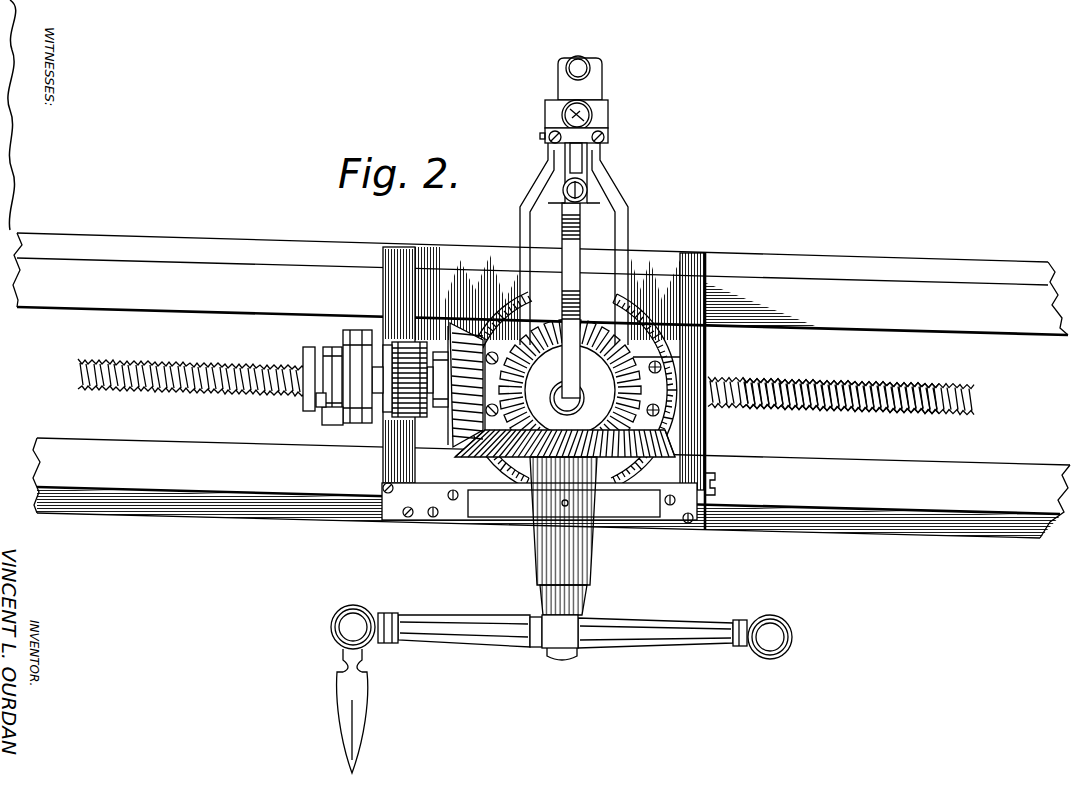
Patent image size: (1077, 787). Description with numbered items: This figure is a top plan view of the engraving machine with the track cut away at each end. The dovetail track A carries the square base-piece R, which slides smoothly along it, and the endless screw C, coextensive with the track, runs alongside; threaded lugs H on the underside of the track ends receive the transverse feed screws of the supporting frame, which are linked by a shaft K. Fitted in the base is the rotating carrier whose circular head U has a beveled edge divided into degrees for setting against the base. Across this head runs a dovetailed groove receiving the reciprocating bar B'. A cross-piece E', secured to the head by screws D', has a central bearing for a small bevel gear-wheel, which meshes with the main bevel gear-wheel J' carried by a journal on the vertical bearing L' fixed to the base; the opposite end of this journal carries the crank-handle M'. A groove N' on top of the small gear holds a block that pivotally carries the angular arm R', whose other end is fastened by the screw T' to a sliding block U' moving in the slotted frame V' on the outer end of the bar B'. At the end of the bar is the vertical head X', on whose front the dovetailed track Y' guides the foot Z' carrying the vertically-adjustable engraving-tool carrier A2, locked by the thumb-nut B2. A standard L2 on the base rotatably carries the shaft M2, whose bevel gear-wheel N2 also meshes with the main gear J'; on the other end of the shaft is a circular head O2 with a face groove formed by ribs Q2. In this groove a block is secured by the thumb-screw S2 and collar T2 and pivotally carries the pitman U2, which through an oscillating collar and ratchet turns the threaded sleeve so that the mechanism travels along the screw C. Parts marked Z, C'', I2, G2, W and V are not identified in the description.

The dovetail track A is at (541, 385).
The endless screw C is at (520, 387).
The square base-piece R is at (695, 378).
The clip Z is at (727, 483).
The screws D' is at (608, 389).
The cross-piece E' is at (582, 385).
The groove N' is at (570, 368).
The internally screw-threaded lugs H is at (570, 390).
The center shaft boss C'' is at (576, 394).
The main bevel gear-wheel J' is at (601, 442).
The angular arm R' is at (537, 244).
The reciprocating bar B' is at (609, 244).
The circular head U is at (594, 273).
The thumb-nut B2 is at (556, 37).
The engraving-tool carrier A2 is at (588, 60).
The foot Z' is at (593, 97).
The dovetailed track Y' is at (607, 112).
The sliding block U' is at (603, 116).
The head base strip I2 is at (566, 158).
The vertical head X' is at (532, 127).
The right head screw G2 is at (610, 143).
The screw T' is at (599, 173).
The frame V' is at (546, 184).
The circular head O2 is at (338, 345).
The standard L2 is at (398, 467).
The shaft M2 is at (432, 282).
The bevel gear-wheel N2 is at (474, 278).
The knurled sleeve W is at (343, 428).
The ribs Q2 is at (358, 428).
The collar T2 is at (340, 347).
The thumb-screw S2 is at (305, 348).
The pitman U2 is at (335, 392).
The ring V is at (312, 433).
The vertical bearing L' is at (539, 516).
The shaft K is at (605, 523).
The crank-handle M' is at (561, 679).